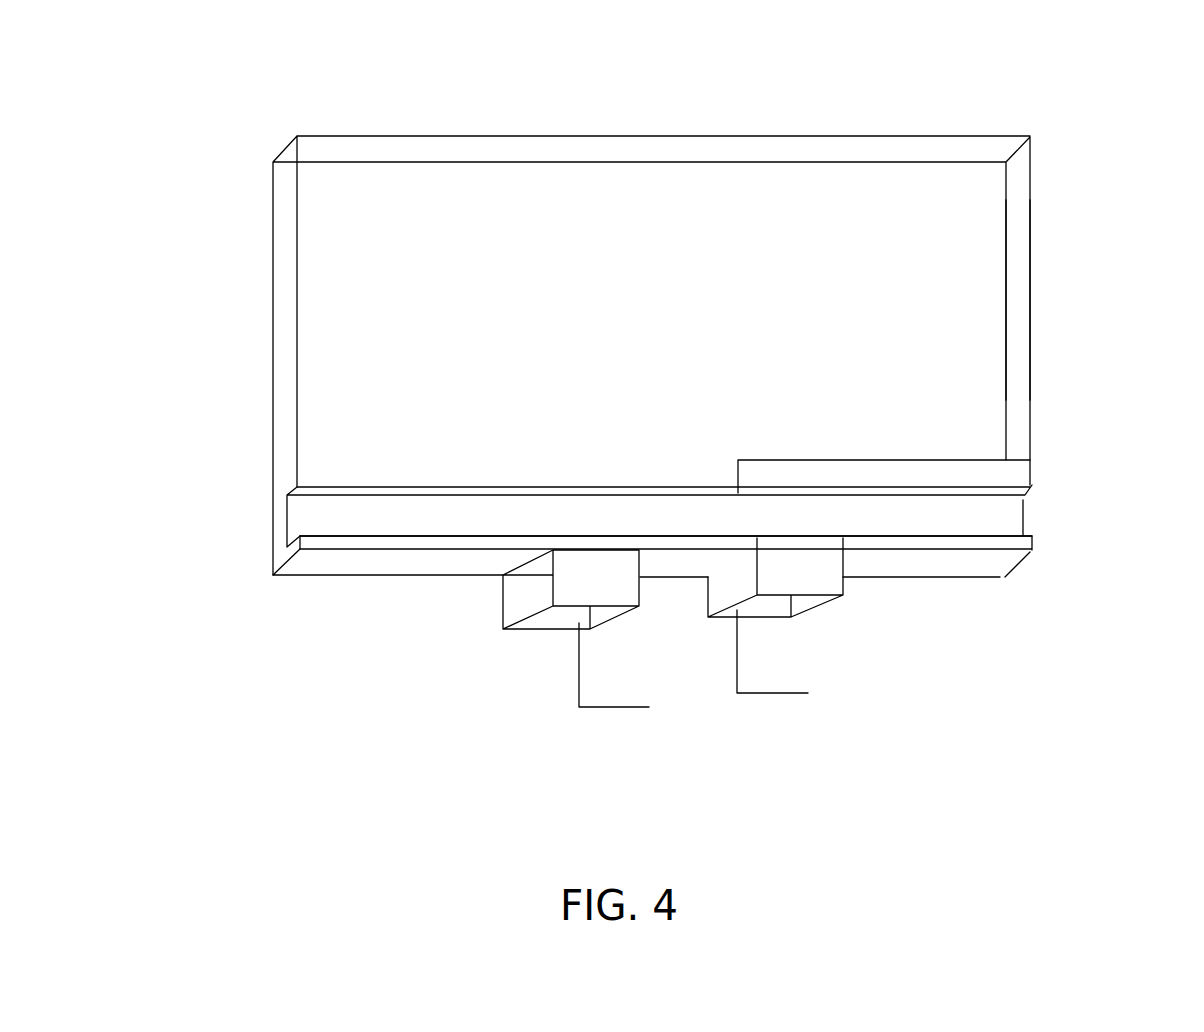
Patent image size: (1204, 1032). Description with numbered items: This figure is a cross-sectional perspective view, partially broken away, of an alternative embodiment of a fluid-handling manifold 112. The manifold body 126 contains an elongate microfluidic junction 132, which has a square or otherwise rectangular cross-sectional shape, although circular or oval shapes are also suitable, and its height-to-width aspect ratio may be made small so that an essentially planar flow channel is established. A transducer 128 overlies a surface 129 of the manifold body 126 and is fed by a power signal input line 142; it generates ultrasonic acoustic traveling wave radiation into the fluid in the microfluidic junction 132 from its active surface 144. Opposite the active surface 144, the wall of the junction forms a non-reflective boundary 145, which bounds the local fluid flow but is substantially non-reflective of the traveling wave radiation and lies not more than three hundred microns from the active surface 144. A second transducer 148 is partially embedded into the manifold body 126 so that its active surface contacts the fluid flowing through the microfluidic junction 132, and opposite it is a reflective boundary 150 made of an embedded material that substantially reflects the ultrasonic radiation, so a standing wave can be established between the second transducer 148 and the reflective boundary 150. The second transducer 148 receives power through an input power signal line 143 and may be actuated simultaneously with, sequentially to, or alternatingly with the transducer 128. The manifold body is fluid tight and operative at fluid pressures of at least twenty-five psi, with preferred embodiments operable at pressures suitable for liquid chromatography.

The fluid-handling manifold 112 is at (792, 112).
The manifold body 126 is at (990, 213).
The transducer 128 is at (517, 597).
The surface 129 is at (328, 567).
The microfluidic junction 132 is at (922, 515).
The power signal input line 142 is at (649, 707).
The input power signal line 143 is at (773, 697).
The active surface 144 is at (598, 530).
The non-reflective boundary 145 is at (305, 494).
The second transducer 148 is at (813, 573).
The reflective boundary 150 is at (1015, 473).